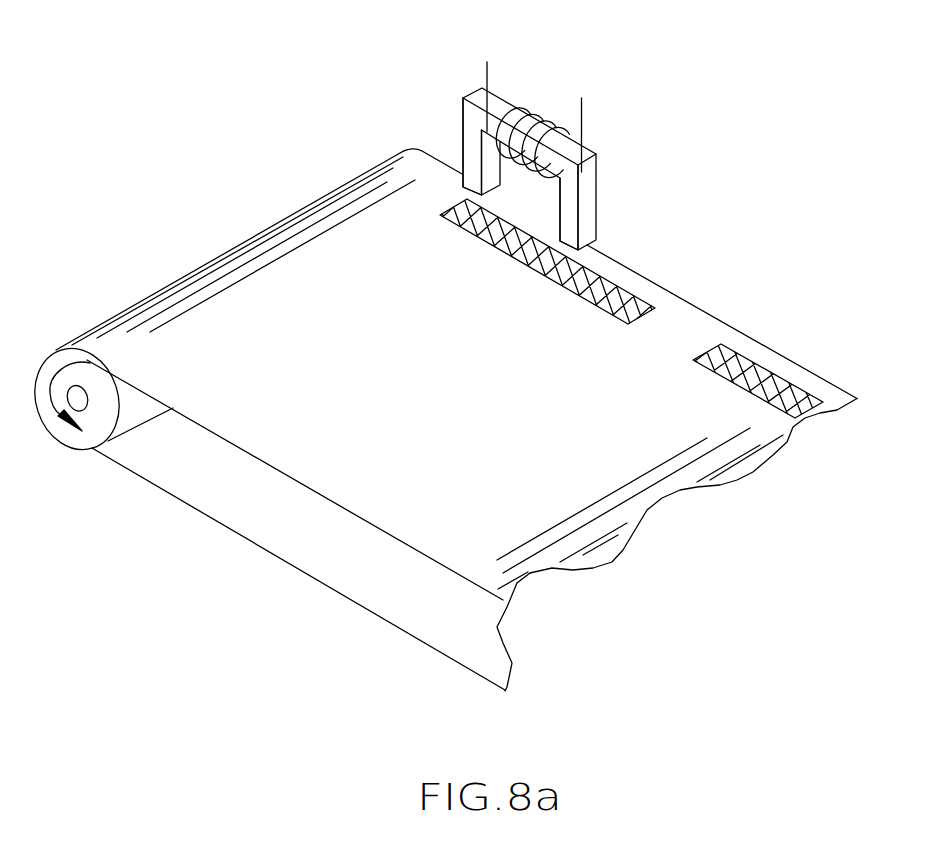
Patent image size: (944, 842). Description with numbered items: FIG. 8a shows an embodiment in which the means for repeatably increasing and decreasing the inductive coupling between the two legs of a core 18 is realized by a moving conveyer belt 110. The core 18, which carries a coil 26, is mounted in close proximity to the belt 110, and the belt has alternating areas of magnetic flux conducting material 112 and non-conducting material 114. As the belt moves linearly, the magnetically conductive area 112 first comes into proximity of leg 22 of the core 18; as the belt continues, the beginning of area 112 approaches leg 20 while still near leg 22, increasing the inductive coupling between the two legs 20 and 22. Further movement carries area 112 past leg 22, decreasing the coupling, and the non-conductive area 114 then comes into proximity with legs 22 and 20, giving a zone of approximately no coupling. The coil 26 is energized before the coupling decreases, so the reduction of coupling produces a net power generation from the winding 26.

The core 18 is at (573, 173).
The leg 20 is at (470, 130).
The leg 22 is at (574, 223).
The coil 26 is at (519, 108).
The conveyer belt 110 is at (150, 297).
The magnetic flux conducting material area 112 is at (645, 273).
The non-conducting material area 114 is at (678, 340).